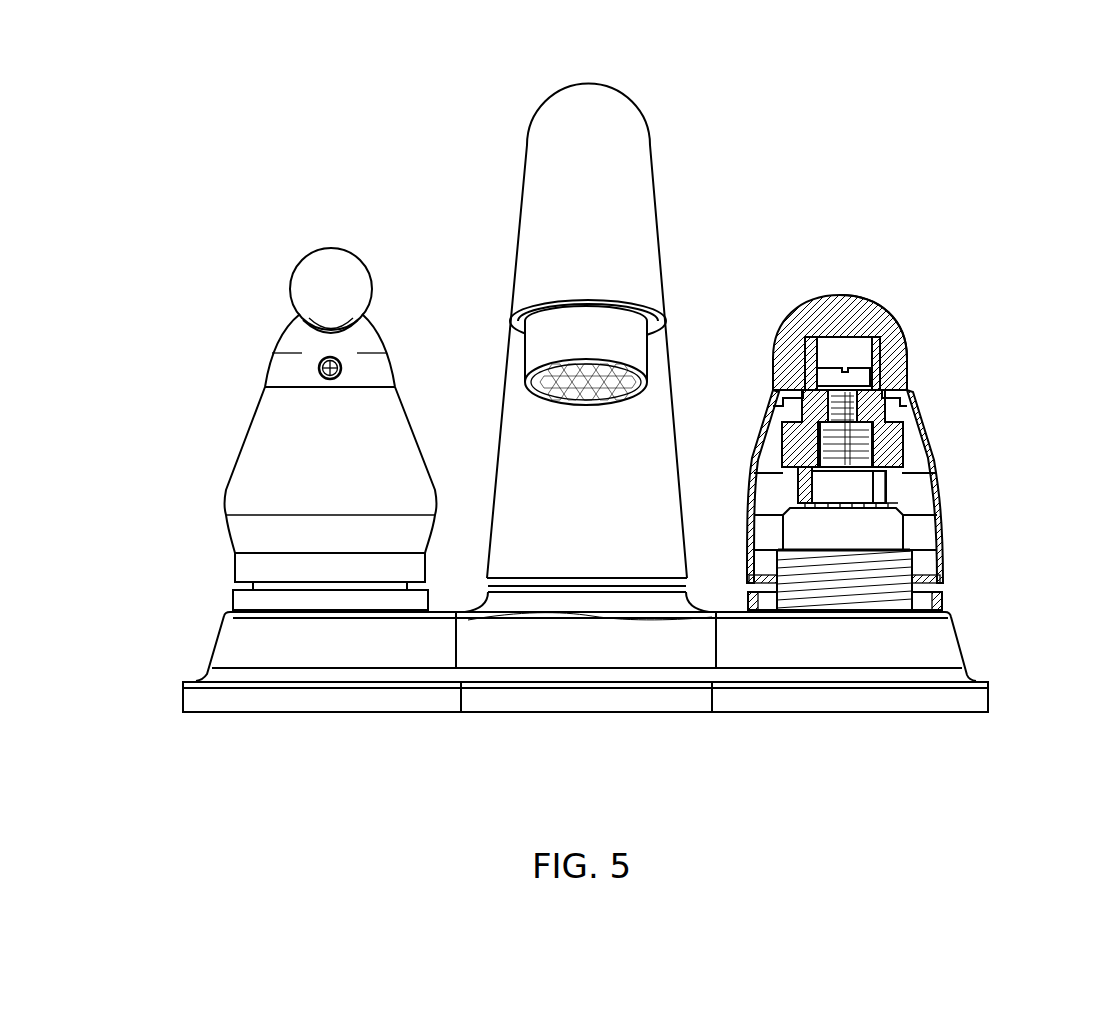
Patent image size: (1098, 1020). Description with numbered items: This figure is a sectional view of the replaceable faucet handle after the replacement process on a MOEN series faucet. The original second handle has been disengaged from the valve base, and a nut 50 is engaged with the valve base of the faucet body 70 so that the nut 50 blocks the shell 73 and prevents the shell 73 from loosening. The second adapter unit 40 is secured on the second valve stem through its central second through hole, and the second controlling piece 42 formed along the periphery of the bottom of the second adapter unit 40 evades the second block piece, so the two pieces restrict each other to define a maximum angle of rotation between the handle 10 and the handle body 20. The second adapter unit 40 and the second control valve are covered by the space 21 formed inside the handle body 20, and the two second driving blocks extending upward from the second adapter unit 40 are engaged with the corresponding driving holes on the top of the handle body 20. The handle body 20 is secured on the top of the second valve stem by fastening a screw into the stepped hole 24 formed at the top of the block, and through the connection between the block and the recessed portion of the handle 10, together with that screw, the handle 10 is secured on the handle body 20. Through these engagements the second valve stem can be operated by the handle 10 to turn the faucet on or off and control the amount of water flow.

The handle 10 is at (270, 318).
The handle body 20 is at (228, 462).
The space 21 is at (915, 507).
The stepped hole 24 is at (905, 394).
The second adapter unit 40 is at (775, 442).
The second controlling piece 42 is at (798, 488).
The nut 50 is at (228, 598).
The faucet body 70 is at (515, 716).
The shell 73 is at (846, 652).